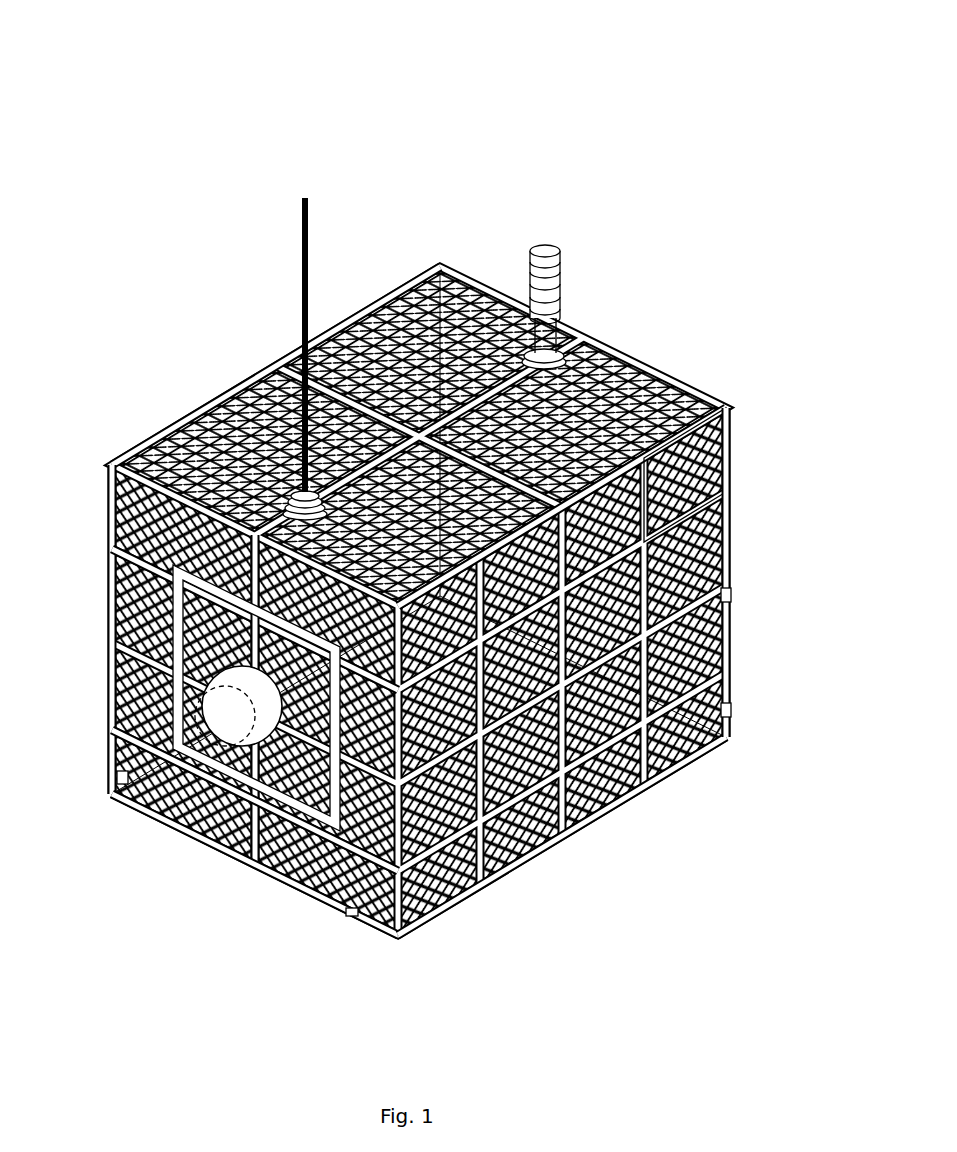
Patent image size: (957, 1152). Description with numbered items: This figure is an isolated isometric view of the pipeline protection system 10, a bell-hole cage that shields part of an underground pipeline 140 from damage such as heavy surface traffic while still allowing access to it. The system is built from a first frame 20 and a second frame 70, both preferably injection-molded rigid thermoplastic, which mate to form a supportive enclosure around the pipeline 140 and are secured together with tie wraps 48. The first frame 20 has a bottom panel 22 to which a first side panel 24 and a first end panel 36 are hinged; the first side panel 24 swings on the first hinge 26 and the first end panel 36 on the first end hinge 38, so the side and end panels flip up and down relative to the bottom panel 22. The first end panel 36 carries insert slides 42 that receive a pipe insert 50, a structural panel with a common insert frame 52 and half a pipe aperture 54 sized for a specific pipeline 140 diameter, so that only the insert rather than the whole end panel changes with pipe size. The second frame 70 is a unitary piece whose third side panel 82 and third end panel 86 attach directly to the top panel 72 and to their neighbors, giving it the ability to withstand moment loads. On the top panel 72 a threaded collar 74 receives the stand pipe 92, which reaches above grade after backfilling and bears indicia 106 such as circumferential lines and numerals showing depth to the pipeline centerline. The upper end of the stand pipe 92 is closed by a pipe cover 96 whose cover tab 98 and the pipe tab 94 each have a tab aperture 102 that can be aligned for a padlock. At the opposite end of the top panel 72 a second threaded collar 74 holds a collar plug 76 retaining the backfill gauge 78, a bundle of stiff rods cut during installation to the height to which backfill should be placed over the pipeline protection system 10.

The pipeline protection system 10 is at (105, 153).
The first frame 20 is at (736, 662).
The bottom panel 22 is at (275, 872).
The first side panel 24 is at (722, 628).
The first hinge 26 is at (612, 792).
The first end panel 36 is at (115, 726).
The first end hinge 38 is at (345, 907).
The insert slides 42 is at (142, 600).
The tie wraps 48 is at (725, 588).
The pipe insert 50 is at (95, 649).
The insert frame 52 is at (215, 712).
The pipe aperture 54 is at (112, 556).
The second frame 70 is at (735, 492).
The top panel 72 is at (700, 390).
The threaded collar 74 is at (580, 345).
The collar plug 76 is at (210, 392).
The backfill gauge 78 is at (292, 292).
The third side panel 82 is at (722, 450).
The third end panel 86 is at (104, 512).
The stand pipe 92 is at (553, 307).
The pipe tab 94 is at (553, 266).
The pipe cover 96 is at (583, 279).
The cover tab 98 is at (550, 266).
The tab aperture 102 is at (548, 262).
The indicia 106 is at (553, 291).
The pipeline 140 is at (115, 770).